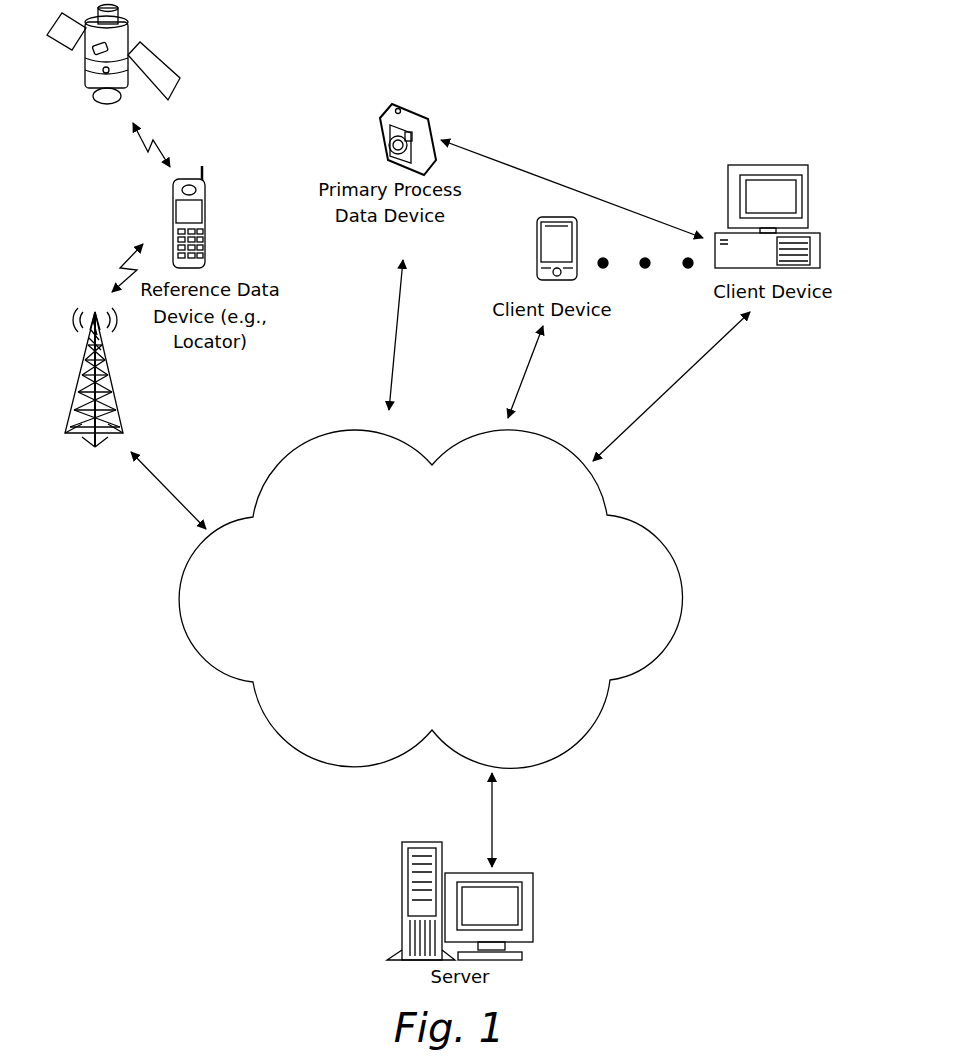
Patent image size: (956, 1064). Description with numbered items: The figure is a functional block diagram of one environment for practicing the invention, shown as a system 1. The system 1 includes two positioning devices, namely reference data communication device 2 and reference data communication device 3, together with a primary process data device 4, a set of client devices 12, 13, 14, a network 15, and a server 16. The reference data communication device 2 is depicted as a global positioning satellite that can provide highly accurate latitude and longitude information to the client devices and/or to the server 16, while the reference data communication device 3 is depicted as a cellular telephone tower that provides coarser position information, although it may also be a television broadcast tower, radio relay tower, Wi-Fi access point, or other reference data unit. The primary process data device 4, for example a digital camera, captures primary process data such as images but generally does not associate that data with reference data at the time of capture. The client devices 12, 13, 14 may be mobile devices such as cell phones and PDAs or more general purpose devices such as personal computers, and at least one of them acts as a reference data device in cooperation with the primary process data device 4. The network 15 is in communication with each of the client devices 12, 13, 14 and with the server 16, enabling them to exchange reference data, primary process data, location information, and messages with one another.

The system 1 is at (540, 78).
The reference data communication device 2 is at (133, 33).
The reference data communication device 3 is at (112, 383).
The primary process data device 4 is at (380, 140).
The client device 12 is at (174, 224).
The client device 13 is at (537, 250).
The client device 14 is at (757, 165).
The network 15 is at (683, 583).
The server 16 is at (400, 903).